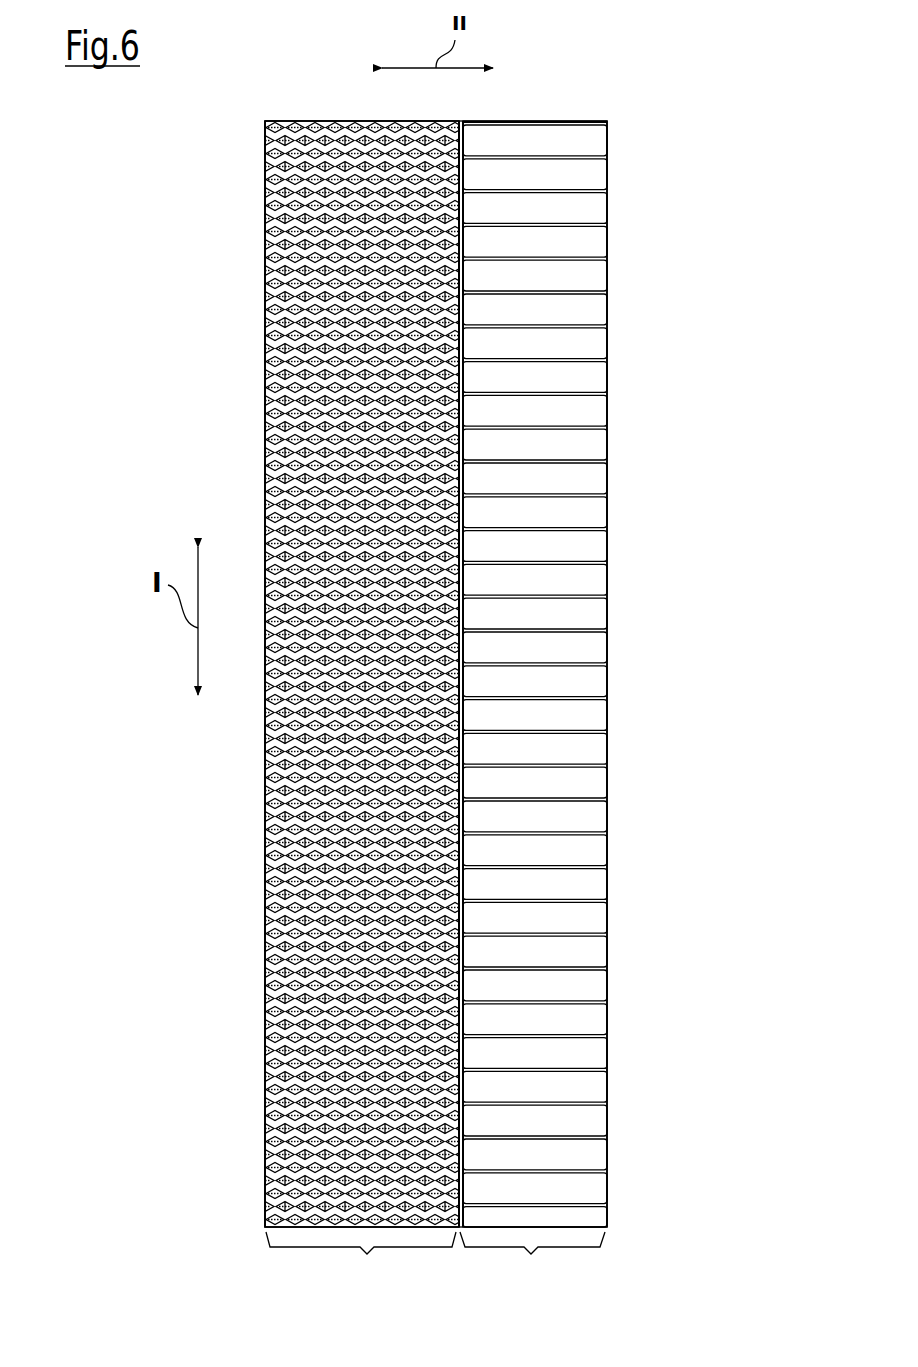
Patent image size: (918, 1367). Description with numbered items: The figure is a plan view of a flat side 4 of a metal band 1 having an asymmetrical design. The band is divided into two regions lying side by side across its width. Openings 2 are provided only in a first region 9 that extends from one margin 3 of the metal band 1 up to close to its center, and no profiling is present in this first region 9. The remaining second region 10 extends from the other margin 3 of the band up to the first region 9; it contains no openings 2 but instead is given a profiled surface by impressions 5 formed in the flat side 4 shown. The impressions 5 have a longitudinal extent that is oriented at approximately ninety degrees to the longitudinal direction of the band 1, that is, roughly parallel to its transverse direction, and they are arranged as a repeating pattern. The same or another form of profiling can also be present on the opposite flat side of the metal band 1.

The metal band 1 is at (584, 115).
The openings 2 is at (608, 394).
The margin 3 is at (265, 201).
The flat side 4 is at (520, 123).
The impressions 5 is at (361, 125).
The first region 9 is at (533, 704).
The second region 10 is at (362, 704).